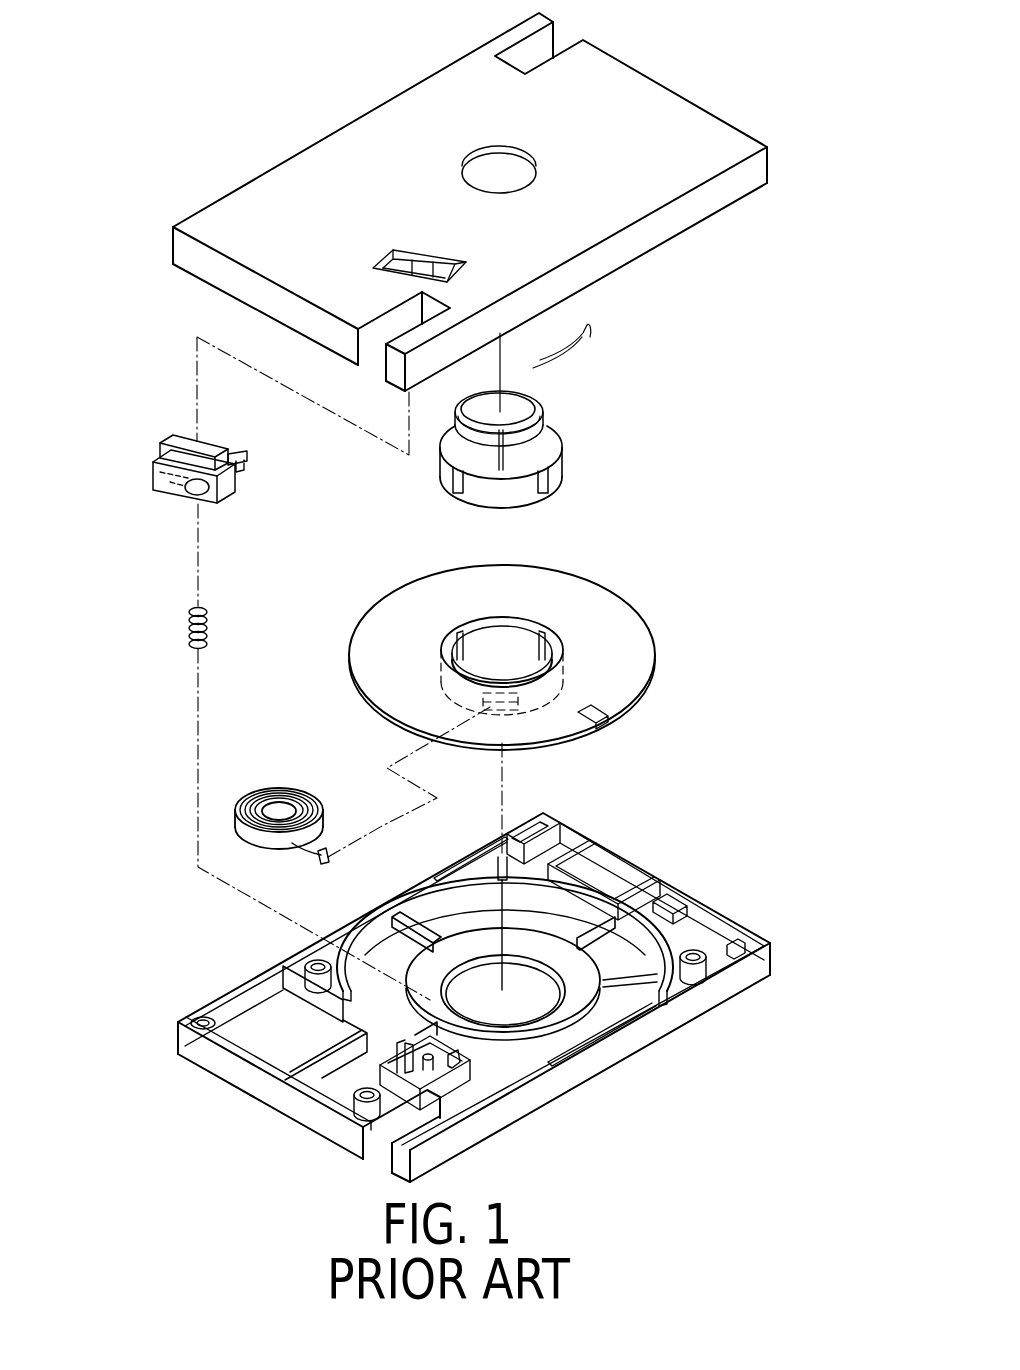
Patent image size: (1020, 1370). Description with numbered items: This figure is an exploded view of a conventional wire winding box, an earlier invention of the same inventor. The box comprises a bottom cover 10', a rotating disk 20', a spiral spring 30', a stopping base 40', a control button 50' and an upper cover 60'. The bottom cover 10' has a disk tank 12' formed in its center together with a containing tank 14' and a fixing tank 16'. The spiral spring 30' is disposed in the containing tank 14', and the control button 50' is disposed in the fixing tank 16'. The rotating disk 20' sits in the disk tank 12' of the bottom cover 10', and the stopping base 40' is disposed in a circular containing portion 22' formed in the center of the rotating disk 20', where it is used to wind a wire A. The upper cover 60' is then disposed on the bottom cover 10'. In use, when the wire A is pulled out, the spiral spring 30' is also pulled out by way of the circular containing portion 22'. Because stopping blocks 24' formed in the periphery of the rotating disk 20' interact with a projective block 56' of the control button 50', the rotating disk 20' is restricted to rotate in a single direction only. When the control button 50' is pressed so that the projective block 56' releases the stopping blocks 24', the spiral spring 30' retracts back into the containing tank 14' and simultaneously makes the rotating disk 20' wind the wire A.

The upper cover 60' is at (470, 202).
The stopping base 40' is at (554, 449).
The wire A is at (500, 389).
The control button 50' is at (152, 469).
The projective block 56' is at (276, 483).
The rotating disk 20' is at (547, 657).
The circular containing portion 22' is at (593, 666).
The stopping blocks 24' is at (661, 729).
The spiral spring 30' is at (282, 787).
The bottom cover 10' is at (474, 997).
The disk tank 12' is at (579, 1000).
The containing tank 14' is at (256, 1057).
The fixing tank 16' is at (475, 1119).